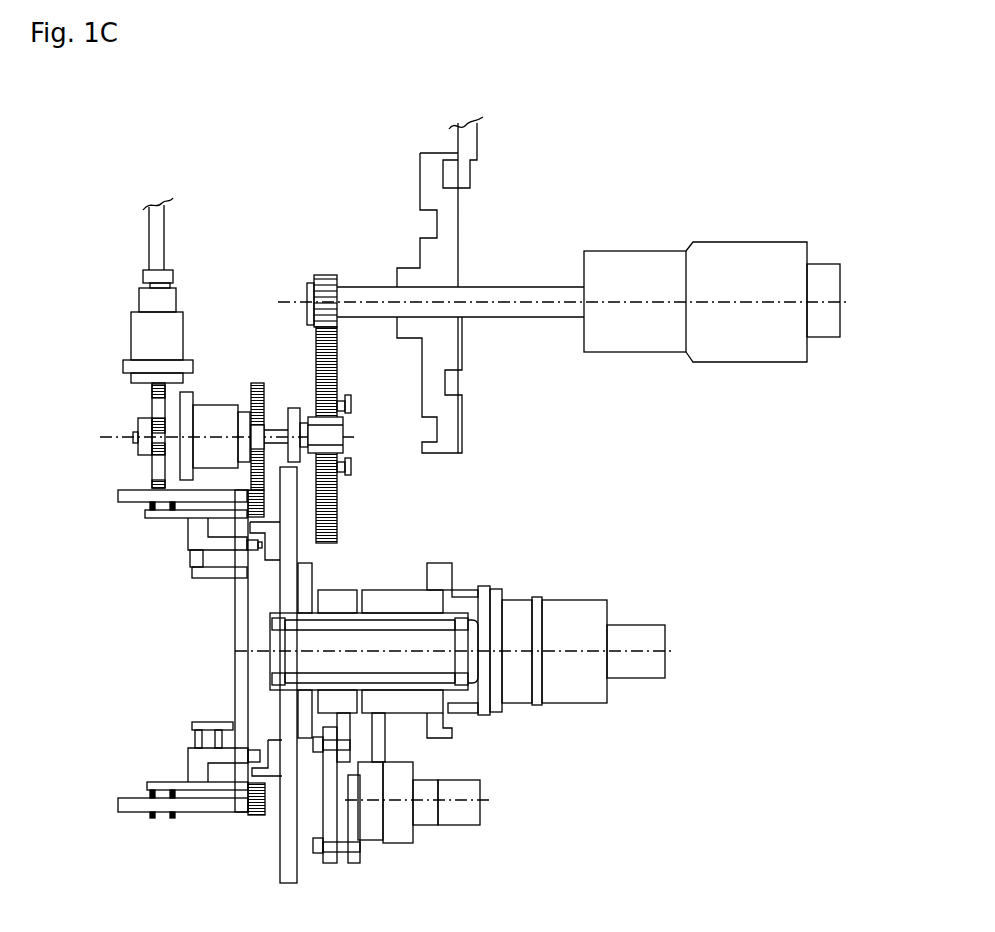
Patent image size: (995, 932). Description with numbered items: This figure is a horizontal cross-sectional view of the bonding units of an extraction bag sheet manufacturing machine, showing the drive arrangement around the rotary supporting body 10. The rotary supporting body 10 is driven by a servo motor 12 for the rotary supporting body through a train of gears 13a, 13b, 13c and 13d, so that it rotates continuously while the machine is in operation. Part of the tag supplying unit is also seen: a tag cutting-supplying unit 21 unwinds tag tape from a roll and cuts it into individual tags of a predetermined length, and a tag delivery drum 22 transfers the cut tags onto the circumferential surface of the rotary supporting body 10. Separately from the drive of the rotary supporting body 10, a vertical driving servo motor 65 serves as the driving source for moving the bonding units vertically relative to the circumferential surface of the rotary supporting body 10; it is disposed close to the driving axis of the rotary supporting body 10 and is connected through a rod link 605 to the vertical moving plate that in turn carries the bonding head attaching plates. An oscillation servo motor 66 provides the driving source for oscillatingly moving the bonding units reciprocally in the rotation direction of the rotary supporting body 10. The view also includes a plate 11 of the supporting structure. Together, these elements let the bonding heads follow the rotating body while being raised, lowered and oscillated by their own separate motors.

The rotary supporting body 10 is at (120, 492).
The mounting plate 11 is at (152, 815).
The servo motor for the rotary supporting body 12 is at (748, 247).
The gear 13a is at (314, 280).
The gear 13b is at (316, 350).
The gear 13c is at (255, 384).
The gear 13d is at (248, 512).
The tag cutting-supplying unit 21 is at (130, 325).
The tag delivery drum 22 is at (151, 388).
The vertical driving servo motor 65 is at (462, 822).
The oscillation servo motor 66 is at (636, 628).
The rod link 605 is at (330, 865).